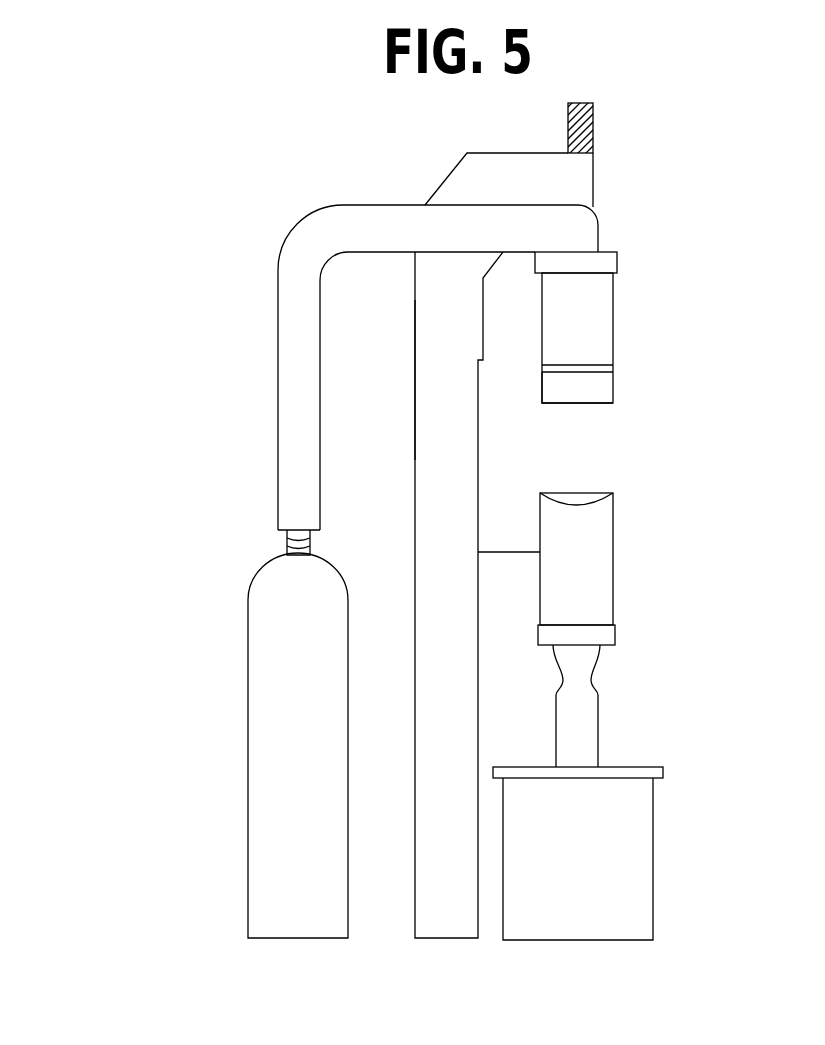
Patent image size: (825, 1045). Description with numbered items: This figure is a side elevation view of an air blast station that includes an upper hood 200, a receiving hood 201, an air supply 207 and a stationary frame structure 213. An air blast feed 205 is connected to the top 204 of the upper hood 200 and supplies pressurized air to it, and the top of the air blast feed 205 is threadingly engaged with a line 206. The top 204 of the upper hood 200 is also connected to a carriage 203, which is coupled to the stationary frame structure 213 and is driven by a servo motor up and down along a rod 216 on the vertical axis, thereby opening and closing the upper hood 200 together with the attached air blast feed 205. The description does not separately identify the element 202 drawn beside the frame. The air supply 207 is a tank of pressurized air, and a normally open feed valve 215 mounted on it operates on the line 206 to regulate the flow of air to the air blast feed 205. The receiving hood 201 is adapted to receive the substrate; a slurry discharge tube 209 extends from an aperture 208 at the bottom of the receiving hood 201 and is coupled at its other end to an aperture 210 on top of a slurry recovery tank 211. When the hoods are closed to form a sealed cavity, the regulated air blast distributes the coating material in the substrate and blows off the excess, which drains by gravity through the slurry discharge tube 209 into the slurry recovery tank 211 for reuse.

The upper hood 200 is at (542, 393).
The receiving hood 201 is at (597, 530).
The vertical pipe 202 is at (413, 620).
The carriage 203 is at (593, 185).
The top of upper hood 204 is at (540, 370).
The air blast feed 205 is at (613, 320).
The line 206 is at (285, 240).
The air supply 207 is at (280, 680).
The aperture 208 is at (615, 635).
The slurry discharge tube 209 is at (597, 670).
The aperture 210 is at (598, 757).
The slurry recovery tank 211 is at (653, 862).
The stationary frame structure 213 is at (415, 378).
The feed valve 215 is at (283, 542).
The rod 216 is at (593, 120).